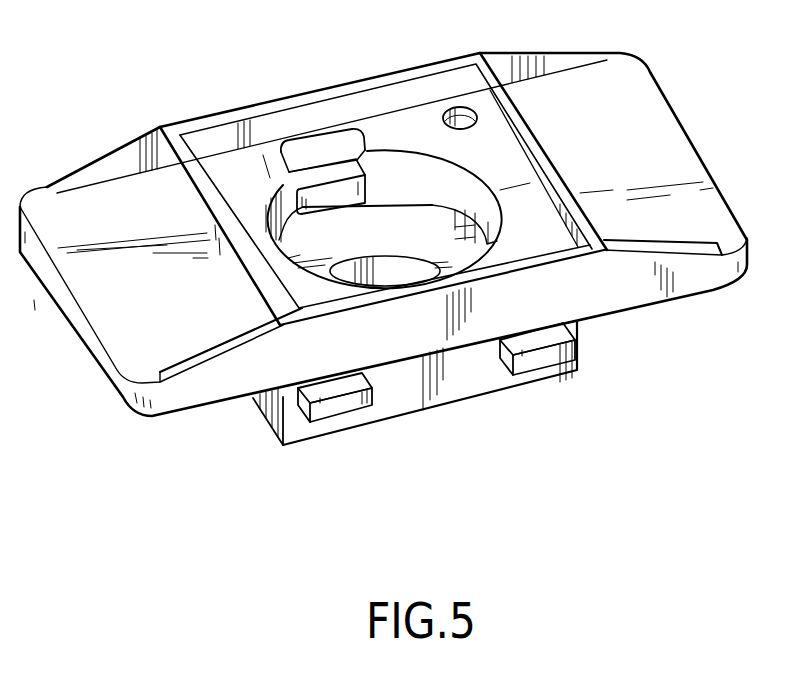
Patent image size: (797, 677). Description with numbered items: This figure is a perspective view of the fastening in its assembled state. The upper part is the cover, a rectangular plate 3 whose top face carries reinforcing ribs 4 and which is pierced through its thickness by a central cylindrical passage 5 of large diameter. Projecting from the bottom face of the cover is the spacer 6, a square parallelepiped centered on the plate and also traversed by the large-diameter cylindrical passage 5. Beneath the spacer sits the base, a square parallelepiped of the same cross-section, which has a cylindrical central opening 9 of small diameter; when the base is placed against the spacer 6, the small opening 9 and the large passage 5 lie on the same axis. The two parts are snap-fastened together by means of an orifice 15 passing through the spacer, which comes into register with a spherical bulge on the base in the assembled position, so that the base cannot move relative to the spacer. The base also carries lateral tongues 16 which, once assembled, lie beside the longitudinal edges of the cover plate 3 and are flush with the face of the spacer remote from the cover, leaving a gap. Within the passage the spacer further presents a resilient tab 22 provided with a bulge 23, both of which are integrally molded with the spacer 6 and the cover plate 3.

The rectangular plate 3 is at (677, 213).
The reinforcing ribs 4 is at (408, 97).
The cylindrical passage 5 is at (493, 190).
The spacer 6 is at (480, 385).
The cylindrical central opening 9 is at (400, 270).
The orifice 15 is at (456, 110).
The lateral tongues 16 is at (340, 408).
The resilient tab 22 is at (335, 175).
The bulge 23 is at (300, 175).